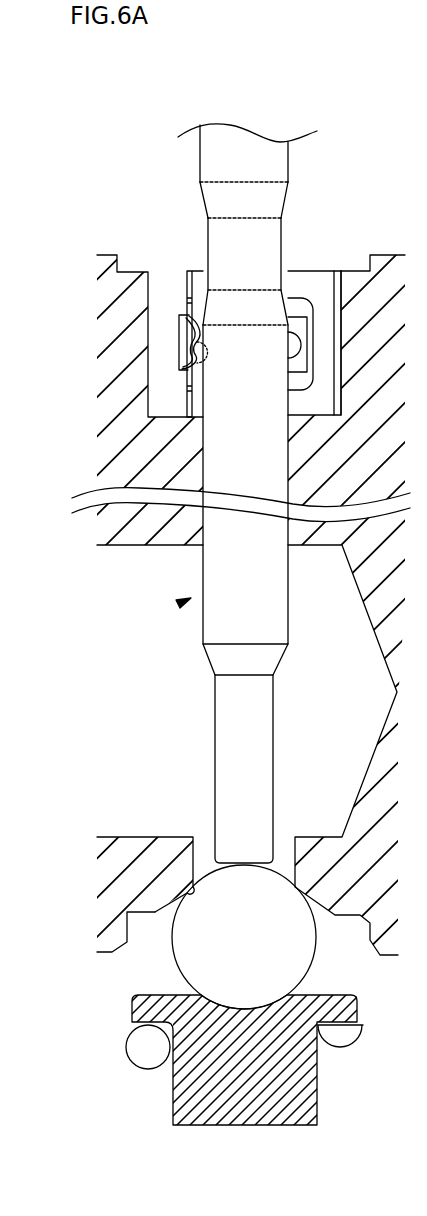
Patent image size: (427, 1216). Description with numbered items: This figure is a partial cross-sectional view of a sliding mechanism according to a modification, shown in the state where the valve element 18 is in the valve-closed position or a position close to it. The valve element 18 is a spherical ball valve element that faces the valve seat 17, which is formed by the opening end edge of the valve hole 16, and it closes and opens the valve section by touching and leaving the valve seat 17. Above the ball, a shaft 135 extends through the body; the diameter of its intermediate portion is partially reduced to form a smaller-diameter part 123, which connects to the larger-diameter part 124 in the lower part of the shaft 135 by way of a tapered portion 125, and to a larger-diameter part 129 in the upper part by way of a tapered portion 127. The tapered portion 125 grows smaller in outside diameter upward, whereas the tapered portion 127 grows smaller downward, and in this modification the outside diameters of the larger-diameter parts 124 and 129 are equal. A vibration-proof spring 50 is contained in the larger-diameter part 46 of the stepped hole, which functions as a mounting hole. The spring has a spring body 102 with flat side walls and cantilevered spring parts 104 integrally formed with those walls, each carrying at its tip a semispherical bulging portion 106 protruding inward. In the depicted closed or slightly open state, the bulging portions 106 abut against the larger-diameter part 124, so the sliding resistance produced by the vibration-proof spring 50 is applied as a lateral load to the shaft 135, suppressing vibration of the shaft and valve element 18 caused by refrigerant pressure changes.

The valve hole 16 is at (194, 838).
The valve seat 17 is at (186, 892).
The valve element 18 is at (175, 907).
The larger-diameter part 46 is at (152, 292).
The vibration-proof spring 50 is at (311, 257).
The spring body 102 is at (187, 285).
The spring part 104 is at (180, 343).
The bulging portion 106 is at (193, 368).
The smaller-diameter part 123 is at (283, 235).
The larger-diameter part 124 is at (203, 438).
The tapered portion 125 is at (288, 308).
The tapered portion 127 is at (288, 195).
The larger-diameter part 129 is at (200, 152).
The shaft 135 is at (183, 602).